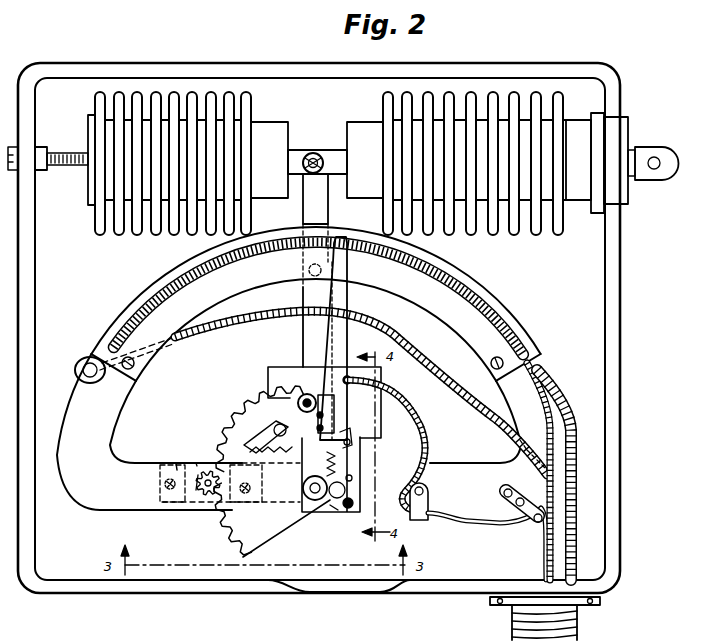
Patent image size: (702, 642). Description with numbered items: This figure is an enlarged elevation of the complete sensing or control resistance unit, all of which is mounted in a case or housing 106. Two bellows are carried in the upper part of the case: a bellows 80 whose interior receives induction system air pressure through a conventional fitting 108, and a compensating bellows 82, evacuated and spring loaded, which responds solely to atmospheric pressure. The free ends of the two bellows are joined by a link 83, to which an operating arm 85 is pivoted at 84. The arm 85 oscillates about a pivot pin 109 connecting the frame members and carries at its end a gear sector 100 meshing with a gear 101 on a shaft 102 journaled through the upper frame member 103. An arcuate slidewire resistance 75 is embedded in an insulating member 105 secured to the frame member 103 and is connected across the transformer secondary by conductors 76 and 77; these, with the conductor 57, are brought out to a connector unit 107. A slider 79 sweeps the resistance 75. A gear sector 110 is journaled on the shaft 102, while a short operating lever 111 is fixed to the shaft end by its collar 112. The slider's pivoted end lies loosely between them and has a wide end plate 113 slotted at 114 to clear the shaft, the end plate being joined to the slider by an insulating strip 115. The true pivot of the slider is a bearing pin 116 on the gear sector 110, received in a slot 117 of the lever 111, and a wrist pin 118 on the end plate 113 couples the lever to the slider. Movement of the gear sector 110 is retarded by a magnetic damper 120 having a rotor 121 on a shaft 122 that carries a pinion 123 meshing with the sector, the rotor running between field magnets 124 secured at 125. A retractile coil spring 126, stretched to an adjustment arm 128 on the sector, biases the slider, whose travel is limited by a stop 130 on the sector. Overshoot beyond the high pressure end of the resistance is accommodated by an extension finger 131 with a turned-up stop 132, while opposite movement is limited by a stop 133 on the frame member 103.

The conductor 57 is at (430, 432).
The slidewire resistance 75 is at (148, 306).
The conductor 76 is at (78, 372).
The conductor 77 is at (578, 472).
The slider 79 is at (342, 298).
The bellows 80 is at (492, 103).
The compensating bellows 82 is at (172, 100).
The link 83 is at (295, 152).
The pivot 84 is at (318, 157).
The operating arm 85 is at (308, 340).
The gear sector 100 is at (373, 460).
The gear 101 is at (300, 501).
The shaft 102 is at (323, 513).
The frame member 103 is at (93, 488).
The insulating member 105 is at (146, 356).
The case 106 is at (155, 588).
The connector unit 107 is at (579, 627).
The fitting 108 is at (648, 178).
The pivot pin 109 is at (309, 270).
The gear sector 110 is at (232, 531).
The operating lever 111 is at (312, 450).
The collar 112 is at (303, 488).
The end plate 113 is at (352, 434).
The slot 114 is at (334, 508).
The insulating strip 115 is at (341, 413).
The bearing pin 116 is at (352, 478).
The slot 117 is at (322, 472).
The wrist pin 118 is at (350, 442).
The magnetic damper 120 is at (176, 463).
The rotor 121 is at (209, 463).
The shaft 122 is at (197, 463).
The pinion 123 is at (198, 476).
The field magnets 124 is at (155, 463).
The magnet securing point 125 is at (158, 485).
The retractile coil spring 126 is at (305, 419).
The adjustment arm 128 is at (238, 448).
The stop 130 is at (303, 397).
The extension finger 131 is at (545, 441).
The stop 132 is at (547, 483).
The stop 133 is at (352, 502).